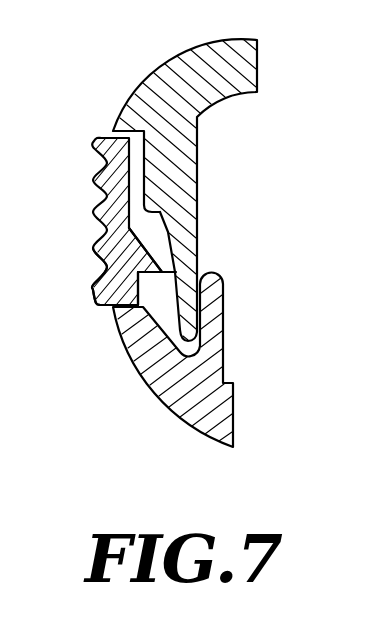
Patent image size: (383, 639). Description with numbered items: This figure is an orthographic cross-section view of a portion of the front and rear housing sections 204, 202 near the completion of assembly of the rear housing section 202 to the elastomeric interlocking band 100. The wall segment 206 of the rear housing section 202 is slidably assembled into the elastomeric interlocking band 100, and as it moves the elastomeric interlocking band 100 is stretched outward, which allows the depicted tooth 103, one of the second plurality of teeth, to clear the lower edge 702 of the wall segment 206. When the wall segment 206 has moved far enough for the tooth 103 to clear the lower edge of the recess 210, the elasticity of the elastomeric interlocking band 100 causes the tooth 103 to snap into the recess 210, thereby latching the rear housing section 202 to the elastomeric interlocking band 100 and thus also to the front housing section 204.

The rear housing section 202 is at (209, 42).
The wall segment 206 is at (197, 168).
The tooth 103 is at (158, 256).
The lower edge 702 is at (178, 272).
The elastomeric interlocking band 100 is at (98, 200).
The recess 210 is at (93, 250).
The front housing section 204 is at (170, 405).